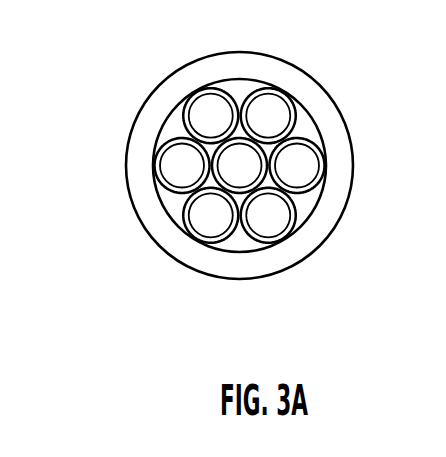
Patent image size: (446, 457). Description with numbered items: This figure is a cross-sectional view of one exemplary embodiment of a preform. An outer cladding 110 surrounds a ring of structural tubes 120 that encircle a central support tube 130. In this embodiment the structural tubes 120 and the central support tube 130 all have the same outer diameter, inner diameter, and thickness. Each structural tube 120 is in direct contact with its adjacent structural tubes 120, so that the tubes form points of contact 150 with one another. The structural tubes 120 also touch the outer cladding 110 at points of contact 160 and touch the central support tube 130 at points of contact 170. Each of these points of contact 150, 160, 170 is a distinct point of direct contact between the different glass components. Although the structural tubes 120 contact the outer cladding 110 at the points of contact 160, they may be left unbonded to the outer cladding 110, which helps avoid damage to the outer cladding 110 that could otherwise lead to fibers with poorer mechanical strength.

The outer cladding 110 is at (276, 260).
The structural tubes 120 is at (183, 213).
The central support tube 130 is at (257, 125).
The points of contact 150 is at (293, 140).
The points of contact 160 is at (192, 92).
The points of contact 170 is at (207, 163).